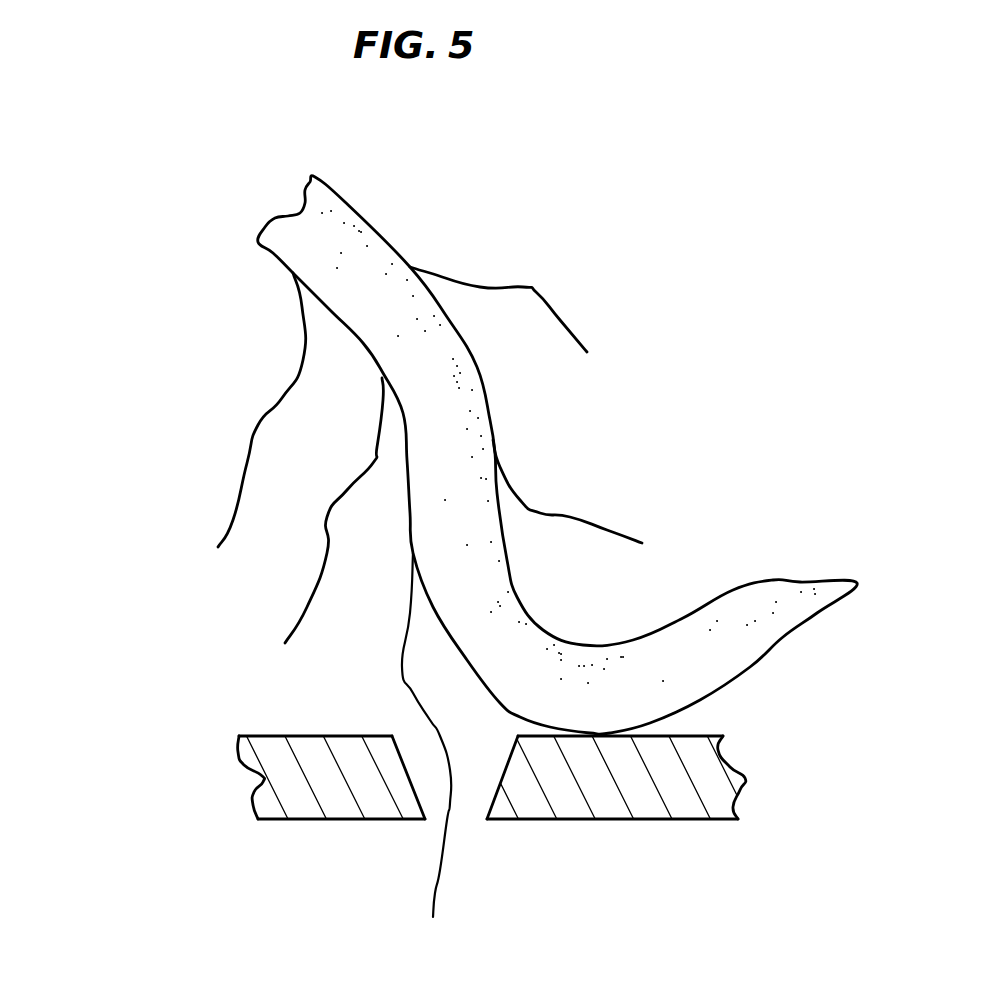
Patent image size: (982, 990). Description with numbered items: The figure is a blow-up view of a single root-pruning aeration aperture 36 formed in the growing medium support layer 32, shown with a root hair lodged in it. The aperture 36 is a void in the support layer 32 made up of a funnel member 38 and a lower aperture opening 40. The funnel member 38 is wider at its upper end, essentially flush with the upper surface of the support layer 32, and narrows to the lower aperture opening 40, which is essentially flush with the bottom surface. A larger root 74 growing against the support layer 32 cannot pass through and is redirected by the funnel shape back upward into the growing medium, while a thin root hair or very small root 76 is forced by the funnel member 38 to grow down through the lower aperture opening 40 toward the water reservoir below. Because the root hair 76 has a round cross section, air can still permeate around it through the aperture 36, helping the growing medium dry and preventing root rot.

The growing medium support layer 32 is at (745, 778).
The root-pruning aeration aperture 36 is at (469, 832).
The funnel member 38 is at (502, 780).
The lower aperture opening 40 is at (467, 820).
The root 74 is at (447, 458).
The root hair 76 is at (437, 873).